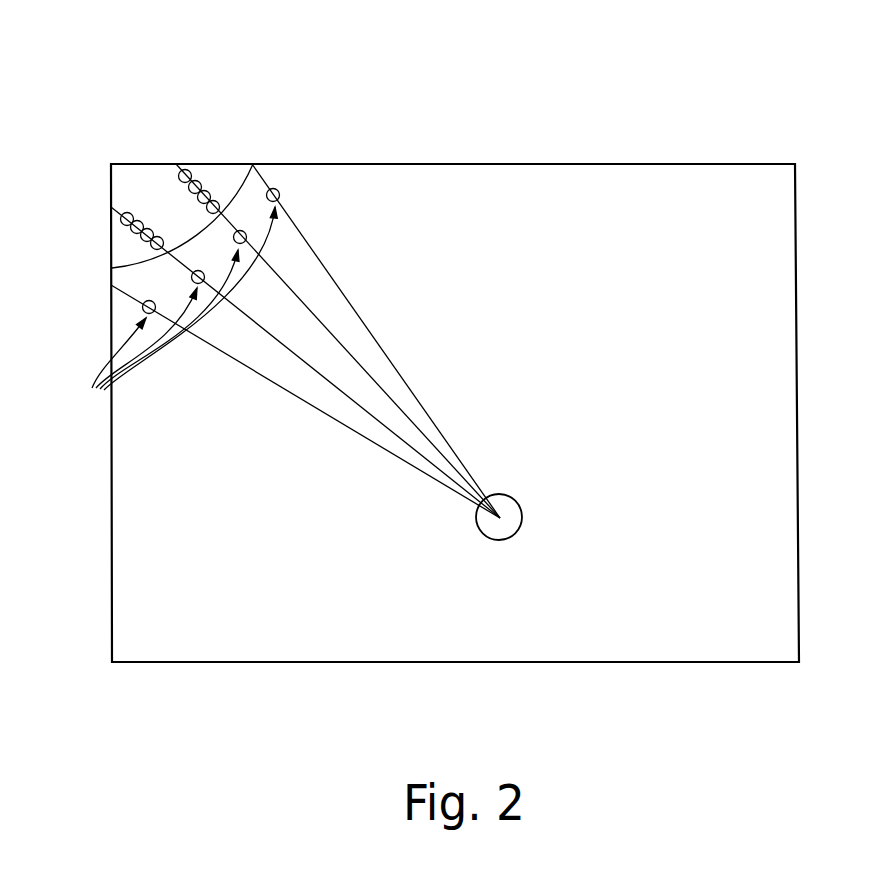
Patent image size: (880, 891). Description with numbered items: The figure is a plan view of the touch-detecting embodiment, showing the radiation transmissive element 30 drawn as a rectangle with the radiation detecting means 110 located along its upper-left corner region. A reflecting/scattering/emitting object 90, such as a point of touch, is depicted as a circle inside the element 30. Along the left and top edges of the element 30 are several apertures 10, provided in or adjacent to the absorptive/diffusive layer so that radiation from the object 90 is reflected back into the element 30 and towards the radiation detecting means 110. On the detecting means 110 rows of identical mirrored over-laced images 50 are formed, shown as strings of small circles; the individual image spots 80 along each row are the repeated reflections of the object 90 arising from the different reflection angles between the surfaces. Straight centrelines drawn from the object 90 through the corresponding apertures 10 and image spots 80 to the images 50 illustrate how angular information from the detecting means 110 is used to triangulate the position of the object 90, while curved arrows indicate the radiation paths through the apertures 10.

The aperture 10 is at (175, 310).
The radiation transmissive element 30 is at (482, 183).
The over-laced images 50 is at (178, 166).
The particles 80 is at (187, 168).
The reflecting/scattering/emitting object 90 is at (502, 494).
The radiation detecting means 110 is at (124, 172).